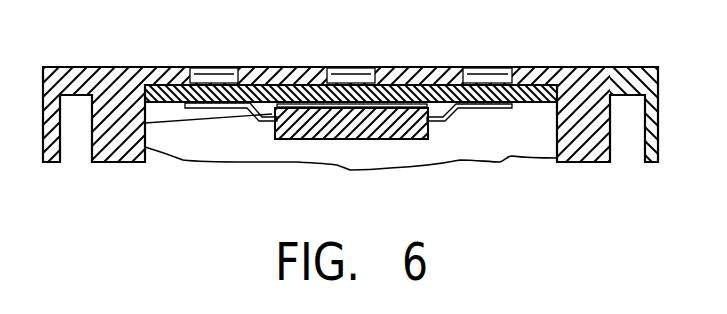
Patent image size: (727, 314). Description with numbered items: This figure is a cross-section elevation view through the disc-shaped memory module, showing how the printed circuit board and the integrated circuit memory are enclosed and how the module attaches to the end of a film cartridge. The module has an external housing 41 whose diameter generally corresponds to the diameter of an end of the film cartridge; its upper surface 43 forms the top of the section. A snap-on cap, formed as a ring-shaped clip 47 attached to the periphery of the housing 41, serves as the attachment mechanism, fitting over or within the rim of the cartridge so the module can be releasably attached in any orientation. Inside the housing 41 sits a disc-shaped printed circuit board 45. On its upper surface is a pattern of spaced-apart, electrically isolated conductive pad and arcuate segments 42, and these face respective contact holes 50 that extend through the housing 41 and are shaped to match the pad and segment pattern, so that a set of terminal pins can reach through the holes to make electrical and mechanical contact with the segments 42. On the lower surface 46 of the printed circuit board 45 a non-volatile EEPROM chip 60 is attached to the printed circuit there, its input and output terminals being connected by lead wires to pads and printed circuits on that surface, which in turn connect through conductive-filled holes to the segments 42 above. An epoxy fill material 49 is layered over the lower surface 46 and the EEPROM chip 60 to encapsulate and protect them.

The external housing 41 is at (595, 67).
The conductive pad and arcuate segments 42 is at (490, 68).
The upper surface 43 is at (538, 67).
The printed circuit board 45 is at (180, 104).
The lower surface 46 is at (510, 108).
The ring-shaped clip 47 is at (660, 120).
The epoxy fill material 49 is at (183, 160).
The contact holes 50 is at (447, 67).
The EEPROM chip 60 is at (313, 140).